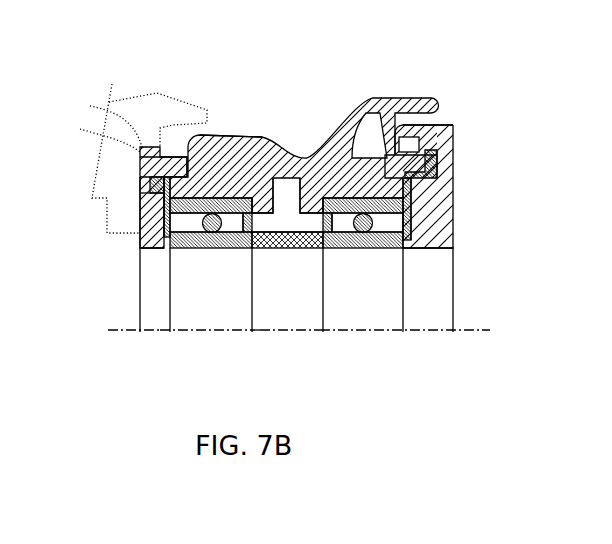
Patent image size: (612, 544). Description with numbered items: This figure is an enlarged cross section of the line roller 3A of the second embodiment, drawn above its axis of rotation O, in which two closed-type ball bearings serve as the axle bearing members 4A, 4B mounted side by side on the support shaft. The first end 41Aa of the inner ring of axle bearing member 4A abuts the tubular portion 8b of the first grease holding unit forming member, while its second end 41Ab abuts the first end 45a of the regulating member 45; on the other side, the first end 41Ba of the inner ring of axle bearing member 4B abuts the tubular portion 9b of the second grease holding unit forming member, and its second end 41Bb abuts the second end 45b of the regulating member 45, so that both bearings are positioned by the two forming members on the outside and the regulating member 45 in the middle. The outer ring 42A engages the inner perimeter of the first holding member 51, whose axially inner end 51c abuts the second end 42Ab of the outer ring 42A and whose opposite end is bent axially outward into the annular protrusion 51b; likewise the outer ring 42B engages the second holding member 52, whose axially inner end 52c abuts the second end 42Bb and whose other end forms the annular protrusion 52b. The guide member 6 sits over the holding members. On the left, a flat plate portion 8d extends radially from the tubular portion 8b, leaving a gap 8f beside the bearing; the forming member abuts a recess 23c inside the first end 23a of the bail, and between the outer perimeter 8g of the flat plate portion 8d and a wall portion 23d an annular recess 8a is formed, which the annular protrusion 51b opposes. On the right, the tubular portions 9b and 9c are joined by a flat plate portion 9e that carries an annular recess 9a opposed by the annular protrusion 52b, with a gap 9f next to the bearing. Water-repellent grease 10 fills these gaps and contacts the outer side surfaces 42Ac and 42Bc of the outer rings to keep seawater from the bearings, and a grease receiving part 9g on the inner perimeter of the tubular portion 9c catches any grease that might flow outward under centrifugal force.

The line roller 3A is at (283, 208).
The axle bearing member 4A is at (202, 360).
The axle bearing member 4B is at (373, 335).
The guide member 6 is at (233, 137).
The annular recess 8a is at (140, 167).
The tubular portion 8b is at (140, 250).
The flat plate portion 8d is at (150, 203).
The gap 8f is at (140, 198).
The outer perimeter 8g is at (150, 188).
The annular recess 9a is at (430, 162).
The tubular portion 9b is at (420, 243).
The tubular portion 9c is at (433, 138).
The flat plate portion 9e is at (440, 197).
The gap 9f is at (423, 187).
The grease receiving part 9g is at (427, 119).
The water-repellent grease 10 is at (147, 217).
The first end 23a is at (148, 150).
The recess 23c is at (96, 135).
The wall portion 23d is at (101, 120).
The first end 41Aa is at (181, 250).
The second end 41Ab is at (233, 250).
The first end 41Ba is at (393, 250).
The second end 41Bb is at (333, 250).
The outer ring 42A is at (199, 216).
The second end 42Ab is at (245, 216).
The outer side surface 42Ac is at (157, 227).
The outer ring 42B is at (385, 216).
The second end 42Bb is at (331, 216).
The outer side surface 42Bc is at (412, 222).
The regulating member 45 is at (287, 295).
The first end 45a is at (267, 249).
The second end 45b is at (308, 249).
The first holding member 51 is at (210, 139).
The annular protrusion 51b is at (172, 152).
The axially inner end 51c is at (270, 182).
The second holding member 52 is at (350, 170).
The annular protrusion 52b is at (378, 105).
The axially inner end 52c is at (306, 182).
The rotation axis O is at (301, 331).